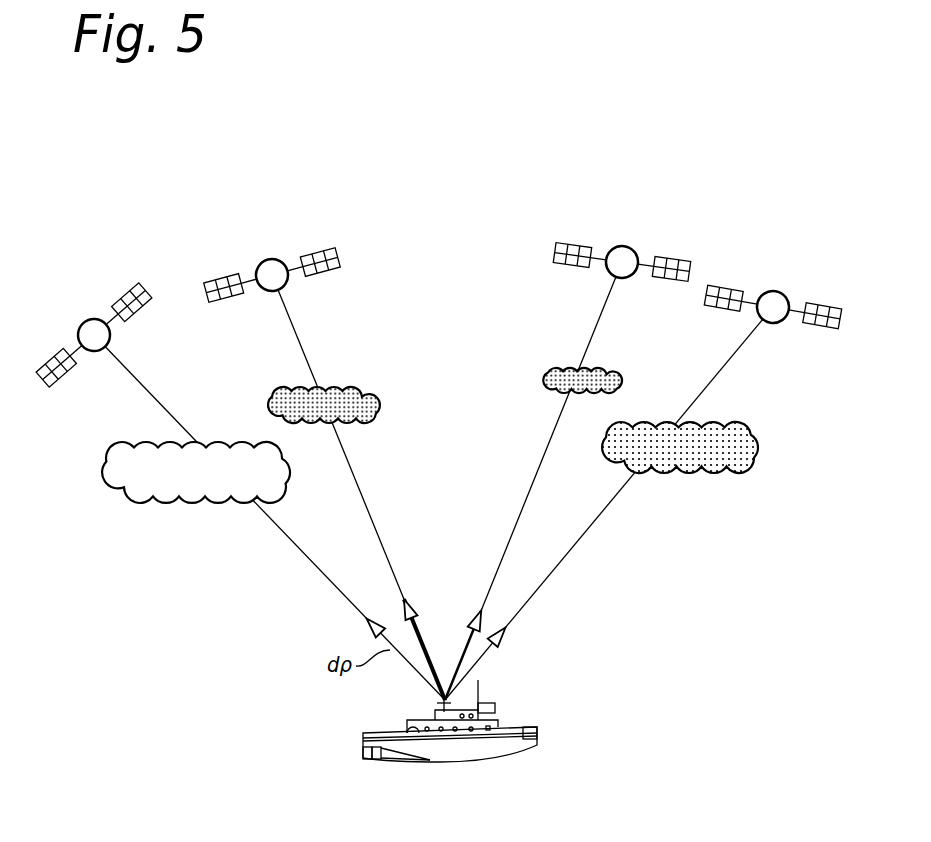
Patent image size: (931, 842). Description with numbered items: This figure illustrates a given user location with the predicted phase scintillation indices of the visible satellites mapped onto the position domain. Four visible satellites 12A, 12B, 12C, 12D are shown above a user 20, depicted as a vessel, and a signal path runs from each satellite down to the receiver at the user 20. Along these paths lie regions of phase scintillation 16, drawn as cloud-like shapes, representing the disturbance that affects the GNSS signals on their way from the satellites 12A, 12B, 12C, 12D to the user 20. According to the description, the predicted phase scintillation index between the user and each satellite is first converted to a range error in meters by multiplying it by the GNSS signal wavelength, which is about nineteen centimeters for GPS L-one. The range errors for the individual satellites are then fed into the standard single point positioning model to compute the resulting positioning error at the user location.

The satellite 12A is at (88, 330).
The satellite 12B is at (270, 268).
The satellite 12C is at (622, 256).
The satellite 12D is at (773, 300).
The cloud / atmospheric disturbance 16 is at (160, 485).
The vessel (ship) with receiver 20 is at (402, 748).